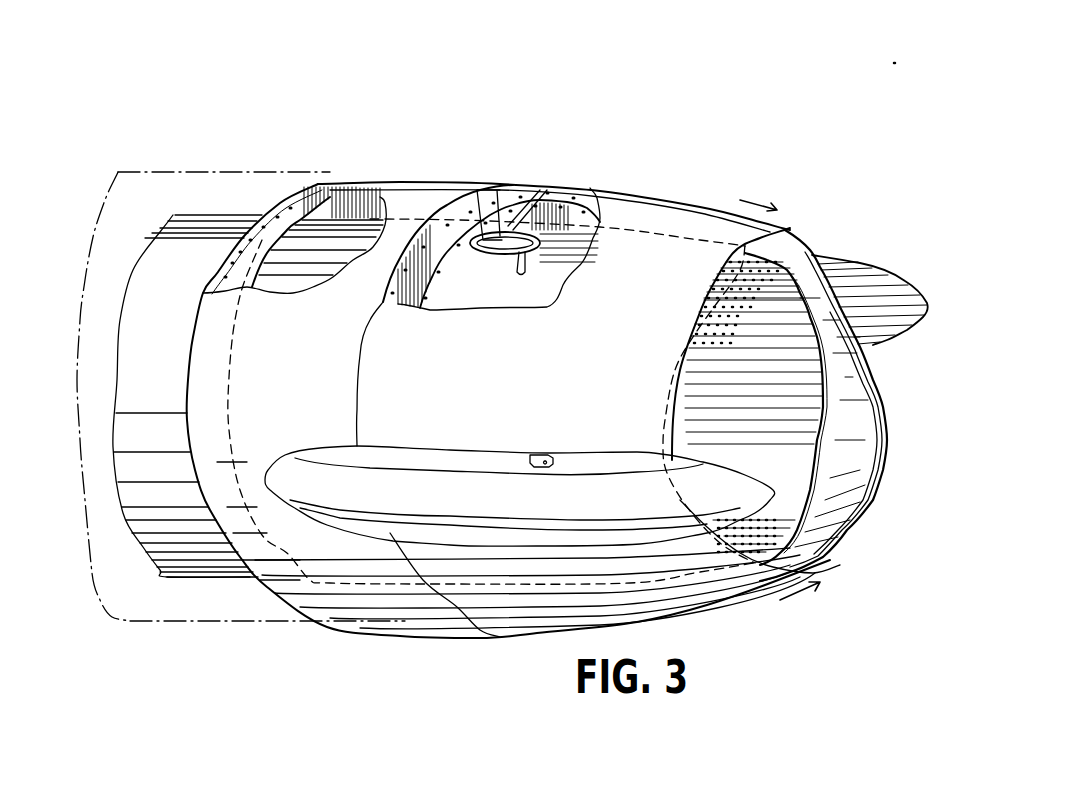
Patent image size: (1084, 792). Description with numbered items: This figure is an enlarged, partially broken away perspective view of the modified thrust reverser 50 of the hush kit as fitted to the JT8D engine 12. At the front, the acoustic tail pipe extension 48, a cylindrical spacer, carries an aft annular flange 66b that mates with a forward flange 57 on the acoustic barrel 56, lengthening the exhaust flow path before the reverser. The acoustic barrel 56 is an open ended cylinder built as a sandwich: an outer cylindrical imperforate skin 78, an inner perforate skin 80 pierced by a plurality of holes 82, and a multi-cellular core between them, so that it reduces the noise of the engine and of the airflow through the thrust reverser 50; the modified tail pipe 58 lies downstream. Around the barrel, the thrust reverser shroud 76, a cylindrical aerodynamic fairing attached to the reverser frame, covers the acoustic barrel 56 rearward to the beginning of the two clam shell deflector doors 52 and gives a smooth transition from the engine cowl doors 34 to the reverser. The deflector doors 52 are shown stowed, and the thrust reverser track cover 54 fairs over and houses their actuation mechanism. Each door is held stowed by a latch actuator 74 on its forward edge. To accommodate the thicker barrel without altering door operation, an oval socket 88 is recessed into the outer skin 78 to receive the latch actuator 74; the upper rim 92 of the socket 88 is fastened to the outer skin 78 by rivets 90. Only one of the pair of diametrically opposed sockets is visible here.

The JT8D engine 12 is at (391, 118).
The cowl doors 34 is at (133, 622).
The acoustic tail pipe extension 48 is at (193, 565).
The thrust reverser 50 is at (668, 190).
The deflector doors 52 is at (570, 384).
The thrust reverser track cover 54 is at (870, 270).
The acoustic barrel 56 is at (482, 307).
The forward flange 57 is at (325, 187).
The modified tail pipe 58 is at (847, 421).
The aft annular flange 66b is at (263, 205).
The latch actuator 74 is at (478, 193).
The thrust reverser shroud 76 is at (403, 630).
The outer cylindrical imperforate skin 78 is at (298, 284).
The inner perforate skin 80 is at (785, 434).
The holes 82 is at (702, 335).
The socket 88 is at (527, 193).
The rivets 90 is at (516, 250).
The upper rim 92 is at (496, 262).